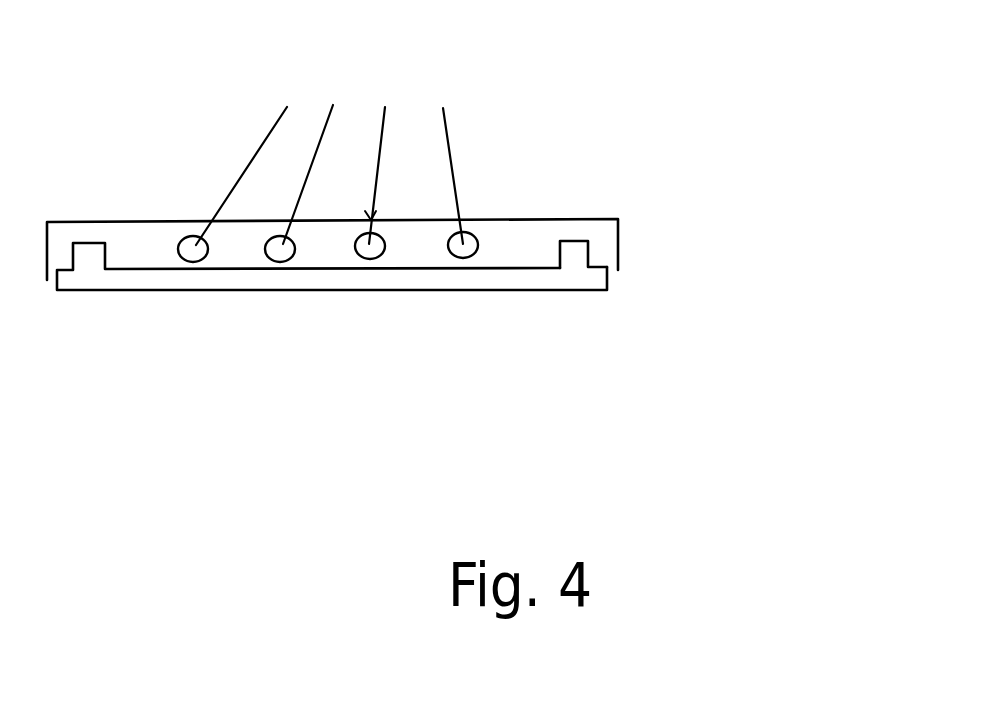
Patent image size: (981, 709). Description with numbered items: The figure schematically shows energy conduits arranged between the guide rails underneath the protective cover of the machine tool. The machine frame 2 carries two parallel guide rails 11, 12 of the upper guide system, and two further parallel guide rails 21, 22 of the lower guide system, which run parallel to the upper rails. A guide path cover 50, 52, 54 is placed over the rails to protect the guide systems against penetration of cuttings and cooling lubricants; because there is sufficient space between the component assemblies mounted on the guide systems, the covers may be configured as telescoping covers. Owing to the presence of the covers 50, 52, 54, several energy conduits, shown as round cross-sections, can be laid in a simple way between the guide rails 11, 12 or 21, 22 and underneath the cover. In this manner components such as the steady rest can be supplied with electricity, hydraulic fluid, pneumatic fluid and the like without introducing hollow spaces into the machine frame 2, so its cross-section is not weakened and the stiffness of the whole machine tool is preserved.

The machine frame 2 is at (252, 290).
The guide rail 11 is at (305, 206).
The guide rail 21 is at (92, 260).
The guide rail 12 is at (557, 345).
The guide rail 22 is at (575, 260).
The guide path cover 50 is at (447, 145).
The guide path cover 52 is at (447, 145).
The guide path cover 54 is at (712, 210).